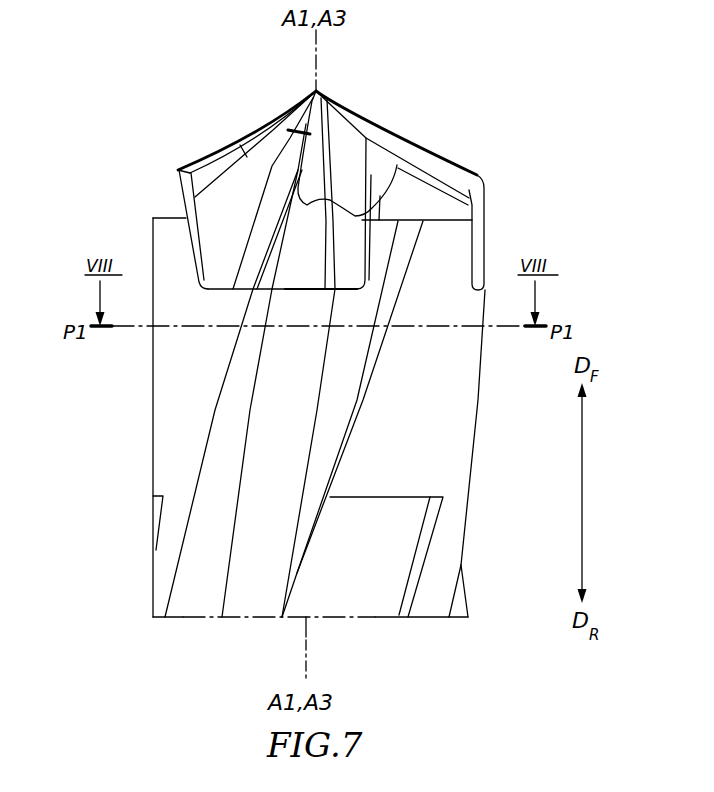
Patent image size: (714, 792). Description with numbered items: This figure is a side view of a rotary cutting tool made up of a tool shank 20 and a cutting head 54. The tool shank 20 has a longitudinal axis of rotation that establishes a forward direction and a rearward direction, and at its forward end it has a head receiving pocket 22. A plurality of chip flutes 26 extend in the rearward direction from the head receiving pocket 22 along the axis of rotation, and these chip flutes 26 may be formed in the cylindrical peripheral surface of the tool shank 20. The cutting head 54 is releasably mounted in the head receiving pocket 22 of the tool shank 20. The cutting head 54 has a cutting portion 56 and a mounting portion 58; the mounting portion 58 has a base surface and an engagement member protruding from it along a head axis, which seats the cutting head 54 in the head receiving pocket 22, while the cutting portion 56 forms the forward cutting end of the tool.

The tool shank 20 is at (437, 437).
The head receiving pocket 22 is at (272, 281).
The chip flutes 26 is at (266, 512).
The cutting head 54 is at (433, 163).
The cutting portion 56 is at (344, 108).
The mounting portion 58 is at (272, 265).